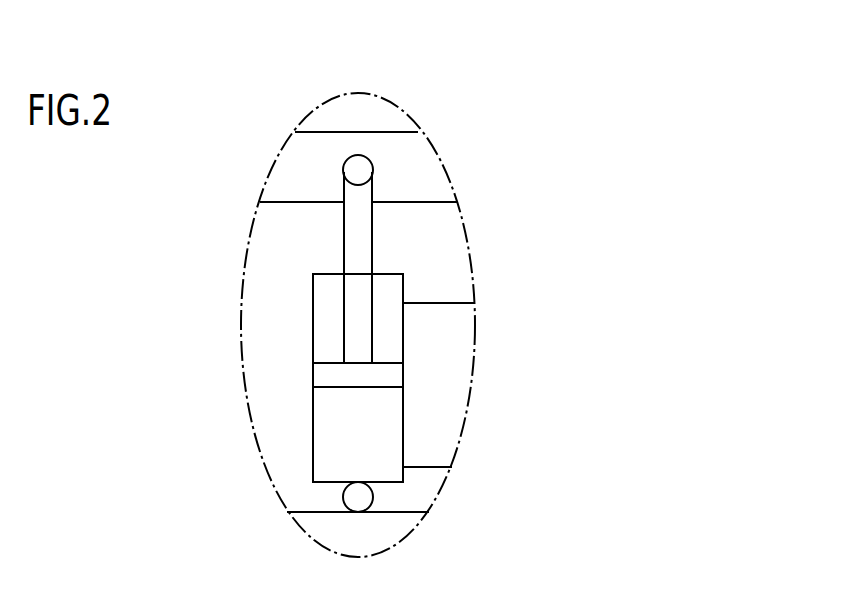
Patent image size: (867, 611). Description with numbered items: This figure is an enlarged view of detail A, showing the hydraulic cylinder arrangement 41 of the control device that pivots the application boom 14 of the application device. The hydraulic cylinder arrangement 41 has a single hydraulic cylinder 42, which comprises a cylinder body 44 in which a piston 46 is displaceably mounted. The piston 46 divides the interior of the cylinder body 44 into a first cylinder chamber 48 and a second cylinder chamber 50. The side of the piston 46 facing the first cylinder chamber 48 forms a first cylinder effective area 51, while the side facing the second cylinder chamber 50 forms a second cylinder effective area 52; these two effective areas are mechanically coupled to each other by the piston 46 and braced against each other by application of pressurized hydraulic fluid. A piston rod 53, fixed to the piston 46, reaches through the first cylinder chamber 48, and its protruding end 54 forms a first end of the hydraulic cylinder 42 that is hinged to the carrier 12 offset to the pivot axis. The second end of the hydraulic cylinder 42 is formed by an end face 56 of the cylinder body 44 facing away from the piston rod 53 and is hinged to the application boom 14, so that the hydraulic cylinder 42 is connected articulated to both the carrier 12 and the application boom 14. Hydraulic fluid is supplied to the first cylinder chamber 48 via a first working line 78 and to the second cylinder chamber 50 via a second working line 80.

The detail A is at (393, 100).
The carrier 12 is at (277, 187).
The application boom 14 is at (325, 513).
The hydraulic cylinder arrangement 41 is at (272, 131).
The hydraulic cylinder 42 is at (288, 319).
The cylinder body 44 is at (310, 433).
The piston 46 is at (327, 377).
The first cylinder chamber 48 is at (327, 301).
The second cylinder chamber 50 is at (333, 447).
The first cylinder effective area 51 is at (388, 362).
The second cylinder effective area 52 is at (383, 392).
The piston rod 53 is at (360, 244).
The protruding end 54 is at (362, 170).
The end face 56 is at (323, 485).
The first working line 78 is at (443, 301).
The second working line 80 is at (430, 467).